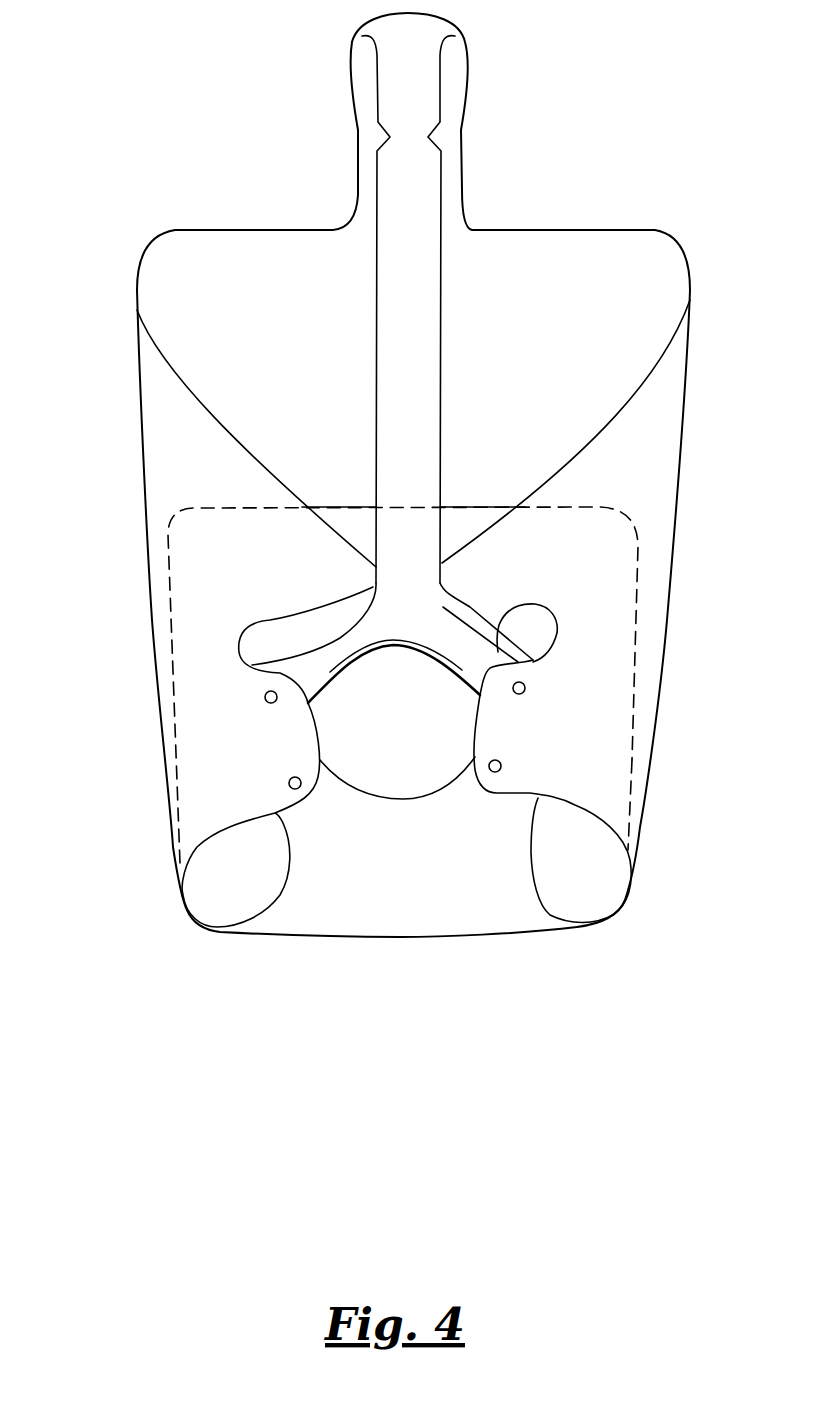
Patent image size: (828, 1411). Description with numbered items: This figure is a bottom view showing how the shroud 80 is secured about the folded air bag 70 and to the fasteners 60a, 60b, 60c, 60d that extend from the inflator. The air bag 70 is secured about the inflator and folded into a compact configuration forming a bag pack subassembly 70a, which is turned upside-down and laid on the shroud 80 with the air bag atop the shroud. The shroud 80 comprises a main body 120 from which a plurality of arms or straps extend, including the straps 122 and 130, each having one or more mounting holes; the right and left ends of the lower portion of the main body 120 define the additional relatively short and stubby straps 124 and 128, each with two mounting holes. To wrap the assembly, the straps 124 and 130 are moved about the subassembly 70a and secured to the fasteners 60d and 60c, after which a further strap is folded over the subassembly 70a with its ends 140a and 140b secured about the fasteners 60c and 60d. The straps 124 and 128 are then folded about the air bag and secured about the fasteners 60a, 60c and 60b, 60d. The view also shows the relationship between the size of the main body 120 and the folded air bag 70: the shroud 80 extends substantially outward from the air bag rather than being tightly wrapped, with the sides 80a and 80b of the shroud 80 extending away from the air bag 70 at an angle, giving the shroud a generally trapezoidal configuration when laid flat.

The shroud 80 is at (183, 226).
The side of the shroud 80a is at (148, 591).
The side of the shroud 80b is at (297, 257).
The main body 120 is at (597, 340).
The air bag 70 is at (467, 498).
The bag pack subassembly 70a is at (623, 797).
The arm or strap 130 is at (347, 610).
The end of strap 140a is at (321, 660).
The end of strap 140b is at (445, 638).
The arm or strap 122 is at (480, 612).
The arm or strap 124 is at (287, 747).
The arm or strap 128 is at (488, 738).
The fastener 60a is at (298, 789).
The fastener 60b is at (492, 772).
The fastener 60c is at (266, 702).
The fastener 60d is at (519, 694).